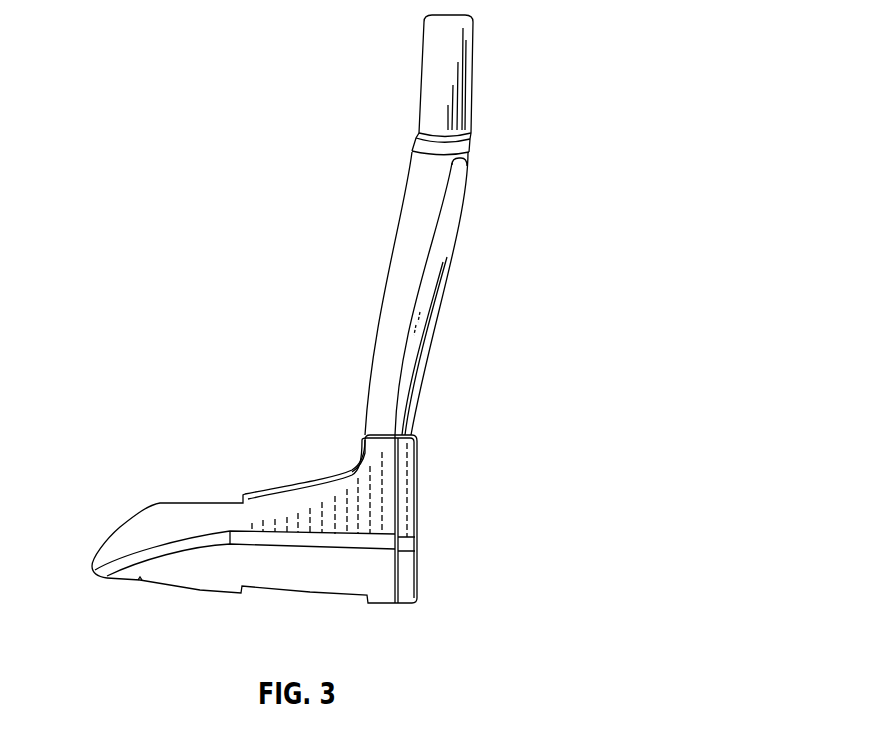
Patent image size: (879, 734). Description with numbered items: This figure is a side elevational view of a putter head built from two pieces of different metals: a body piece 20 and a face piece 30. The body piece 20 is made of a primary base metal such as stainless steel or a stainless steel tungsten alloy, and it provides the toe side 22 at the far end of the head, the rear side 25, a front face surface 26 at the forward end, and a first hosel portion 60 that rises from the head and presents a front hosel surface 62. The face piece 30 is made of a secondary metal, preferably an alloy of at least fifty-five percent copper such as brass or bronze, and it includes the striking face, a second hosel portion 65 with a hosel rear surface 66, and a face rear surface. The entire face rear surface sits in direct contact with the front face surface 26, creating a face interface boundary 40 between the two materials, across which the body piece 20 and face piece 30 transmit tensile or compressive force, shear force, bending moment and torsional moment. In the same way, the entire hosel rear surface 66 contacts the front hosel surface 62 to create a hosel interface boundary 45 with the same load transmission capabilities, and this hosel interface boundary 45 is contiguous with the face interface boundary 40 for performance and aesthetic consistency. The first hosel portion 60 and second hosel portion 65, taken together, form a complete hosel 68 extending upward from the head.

The body piece 20 is at (203, 502).
The toe side 22 is at (387, 572).
The rear side 25 is at (98, 558).
The front face surface 26 is at (398, 596).
The face piece 30 is at (420, 563).
The face interface boundary 40 is at (398, 481).
The hosel interface boundary 45 is at (443, 208).
The first hosel portion 60 is at (390, 265).
The front hosel surface 62 is at (410, 317).
The second hosel portion 65 is at (447, 263).
The hosel rear surface 66 is at (402, 353).
The hosel 68 is at (411, 143).